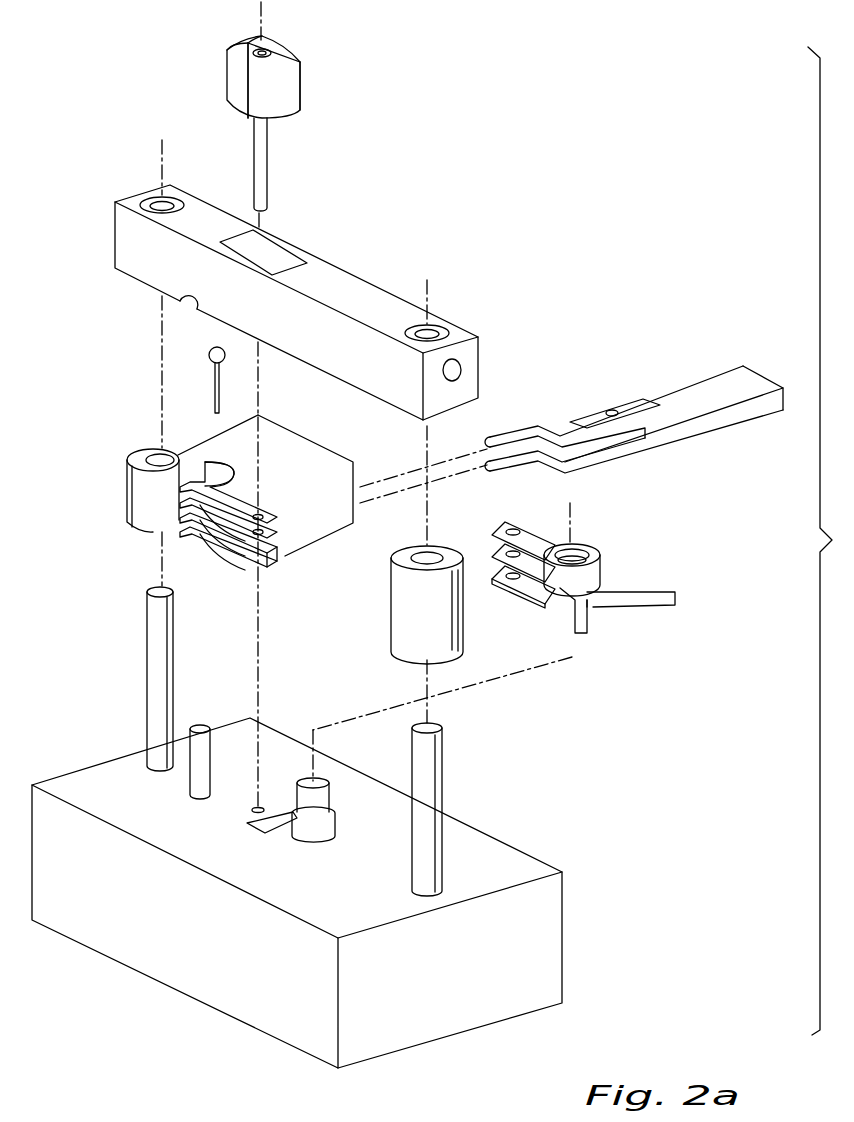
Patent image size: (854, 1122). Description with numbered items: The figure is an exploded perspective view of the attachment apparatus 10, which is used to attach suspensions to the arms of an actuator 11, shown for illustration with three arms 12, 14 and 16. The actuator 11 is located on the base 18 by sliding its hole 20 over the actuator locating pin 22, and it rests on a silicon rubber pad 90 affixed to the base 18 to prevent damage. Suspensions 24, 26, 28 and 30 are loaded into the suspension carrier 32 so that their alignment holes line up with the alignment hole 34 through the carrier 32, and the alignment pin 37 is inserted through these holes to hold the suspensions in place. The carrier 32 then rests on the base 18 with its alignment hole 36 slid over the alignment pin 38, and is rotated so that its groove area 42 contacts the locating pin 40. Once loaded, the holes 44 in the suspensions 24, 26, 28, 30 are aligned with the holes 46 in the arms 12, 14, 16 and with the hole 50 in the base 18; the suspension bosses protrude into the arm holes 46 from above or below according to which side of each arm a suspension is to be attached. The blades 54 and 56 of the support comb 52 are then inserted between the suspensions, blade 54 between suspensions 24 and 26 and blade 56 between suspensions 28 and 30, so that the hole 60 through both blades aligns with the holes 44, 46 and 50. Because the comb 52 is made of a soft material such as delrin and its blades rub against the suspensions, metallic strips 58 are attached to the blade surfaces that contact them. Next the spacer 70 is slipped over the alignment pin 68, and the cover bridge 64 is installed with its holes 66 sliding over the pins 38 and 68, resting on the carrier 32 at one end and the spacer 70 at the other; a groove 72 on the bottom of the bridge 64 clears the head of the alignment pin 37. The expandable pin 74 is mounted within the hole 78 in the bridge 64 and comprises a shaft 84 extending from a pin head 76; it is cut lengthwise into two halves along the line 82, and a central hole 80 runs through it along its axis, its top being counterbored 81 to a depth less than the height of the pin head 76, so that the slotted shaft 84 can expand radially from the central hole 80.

The attachment apparatus 10 is at (642, 238).
The actuator 11 is at (602, 612).
The actuator arm 12 is at (507, 522).
The actuator arm 14 is at (495, 552).
The actuator arm 16 is at (507, 585).
The base 18 is at (568, 949).
The hole 20 is at (598, 550).
The actuator locating pin 22 is at (331, 784).
The suspension 24 is at (257, 516).
The suspension 26 is at (268, 529).
The suspension 28 is at (278, 543).
The suspension 30 is at (279, 560).
The suspension carrier 32 is at (124, 482).
The alignment hole 34 is at (214, 489).
The alignment hole 36 is at (152, 452).
The alignment pin 37 is at (213, 402).
The alignment pin 38 is at (146, 700).
The locating pin 40 is at (190, 772).
The groove area 42 is at (203, 462).
The hole 44 is at (248, 567).
The hole 46 is at (518, 527).
The hole 50 is at (253, 808).
The support comb 52 is at (755, 360).
The blade 54 is at (530, 428).
The blade 56 is at (588, 469).
The metallic strips 58 is at (637, 402).
The hole 60 is at (612, 409).
The cover bridge 64 is at (110, 230).
The holes in the bridge 66 is at (158, 200).
The alignment pin 68 is at (442, 798).
The spacer 70 is at (391, 618).
The groove 72 is at (190, 308).
The expandable pin 74 is at (222, 77).
The pin head 76 is at (292, 92).
The hole 78 is at (284, 262).
The central hole 80 is at (268, 50).
The counterbore 81 is at (258, 49).
The cut line 82 is at (245, 96).
The shaft 84 is at (268, 163).
The silicon rubber pad 90 is at (255, 834).